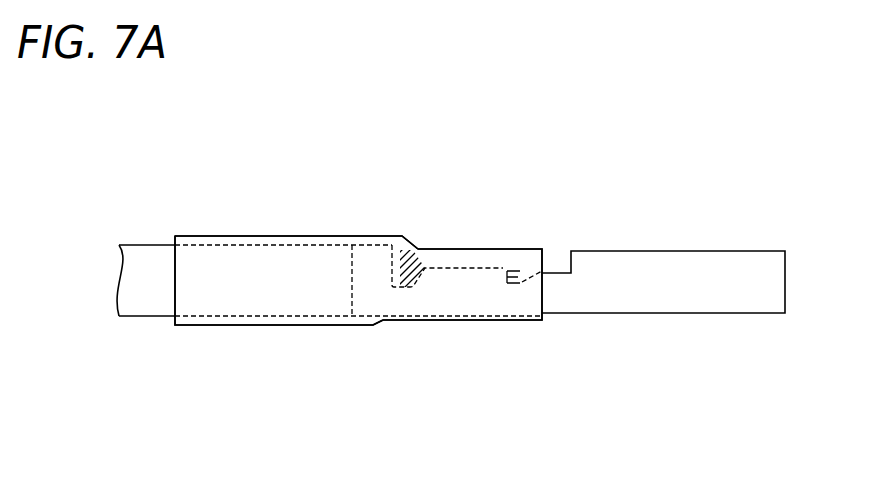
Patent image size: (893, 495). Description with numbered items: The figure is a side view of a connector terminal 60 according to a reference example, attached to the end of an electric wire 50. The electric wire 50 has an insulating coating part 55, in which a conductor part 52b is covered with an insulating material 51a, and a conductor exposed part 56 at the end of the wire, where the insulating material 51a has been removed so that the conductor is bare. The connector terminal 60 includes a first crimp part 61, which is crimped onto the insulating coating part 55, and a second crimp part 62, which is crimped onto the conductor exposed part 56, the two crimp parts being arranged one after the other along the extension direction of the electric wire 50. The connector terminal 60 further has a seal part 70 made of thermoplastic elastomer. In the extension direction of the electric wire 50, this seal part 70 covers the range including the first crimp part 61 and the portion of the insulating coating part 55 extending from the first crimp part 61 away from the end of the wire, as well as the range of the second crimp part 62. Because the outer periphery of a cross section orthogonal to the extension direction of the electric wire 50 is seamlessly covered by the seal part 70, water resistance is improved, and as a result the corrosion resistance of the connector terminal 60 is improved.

The electric wire 50 is at (149, 245).
The insulating material 51a is at (147, 317).
The insulating coating part 55 is at (273, 245).
The conductor exposed part 56 is at (412, 248).
The conductor part 52b is at (414, 254).
The seal part 70 is at (518, 249).
The connector terminal 60 is at (443, 292).
The first crimp part 61 is at (372, 285).
The second crimp part 62 is at (478, 297).